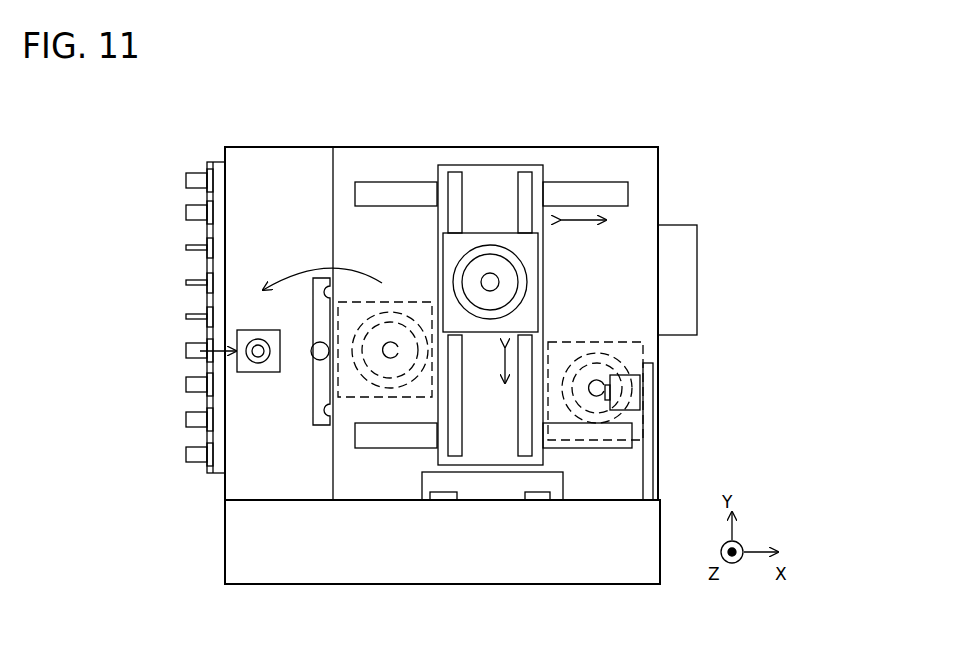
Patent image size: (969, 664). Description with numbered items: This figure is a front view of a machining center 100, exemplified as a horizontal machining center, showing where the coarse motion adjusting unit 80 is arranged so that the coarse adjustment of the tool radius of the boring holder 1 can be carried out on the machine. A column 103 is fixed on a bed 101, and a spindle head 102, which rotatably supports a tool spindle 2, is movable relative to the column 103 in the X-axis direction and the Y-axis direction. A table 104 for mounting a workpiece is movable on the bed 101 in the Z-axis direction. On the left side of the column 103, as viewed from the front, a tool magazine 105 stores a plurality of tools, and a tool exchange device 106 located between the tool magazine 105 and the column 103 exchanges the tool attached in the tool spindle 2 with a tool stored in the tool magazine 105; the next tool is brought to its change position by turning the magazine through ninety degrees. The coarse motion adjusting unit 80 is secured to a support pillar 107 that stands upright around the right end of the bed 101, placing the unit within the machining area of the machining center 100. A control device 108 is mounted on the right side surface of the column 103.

The boring holder 1 is at (500, 281).
The tool spindle 2 is at (493, 256).
The coarse motion adjusting unit 80 is at (638, 374).
The machining center 100 is at (683, 141).
The bed 101 is at (225, 520).
The spindle head 102 is at (473, 232).
The column 103 is at (634, 147).
The table 104 is at (422, 487).
The tool magazine 105 is at (213, 162).
The tool exchange device 106 is at (308, 310).
The support pillar 107 is at (653, 462).
The control device 108 is at (692, 224).